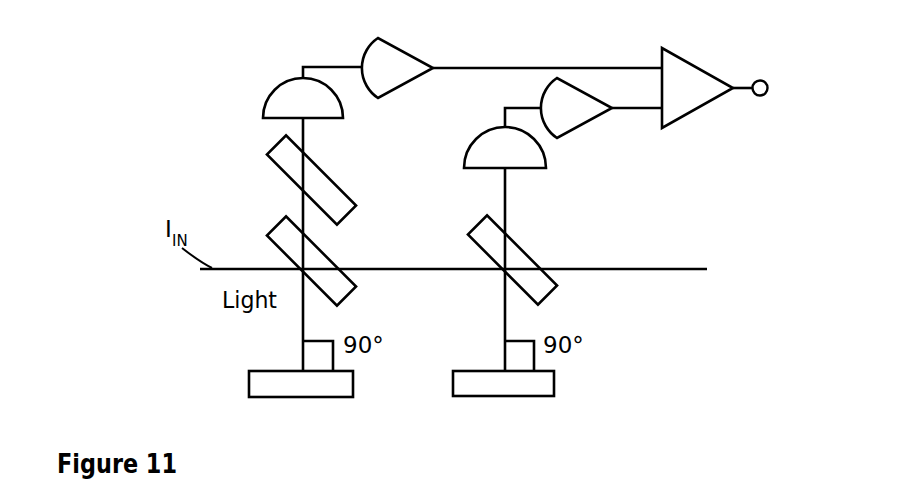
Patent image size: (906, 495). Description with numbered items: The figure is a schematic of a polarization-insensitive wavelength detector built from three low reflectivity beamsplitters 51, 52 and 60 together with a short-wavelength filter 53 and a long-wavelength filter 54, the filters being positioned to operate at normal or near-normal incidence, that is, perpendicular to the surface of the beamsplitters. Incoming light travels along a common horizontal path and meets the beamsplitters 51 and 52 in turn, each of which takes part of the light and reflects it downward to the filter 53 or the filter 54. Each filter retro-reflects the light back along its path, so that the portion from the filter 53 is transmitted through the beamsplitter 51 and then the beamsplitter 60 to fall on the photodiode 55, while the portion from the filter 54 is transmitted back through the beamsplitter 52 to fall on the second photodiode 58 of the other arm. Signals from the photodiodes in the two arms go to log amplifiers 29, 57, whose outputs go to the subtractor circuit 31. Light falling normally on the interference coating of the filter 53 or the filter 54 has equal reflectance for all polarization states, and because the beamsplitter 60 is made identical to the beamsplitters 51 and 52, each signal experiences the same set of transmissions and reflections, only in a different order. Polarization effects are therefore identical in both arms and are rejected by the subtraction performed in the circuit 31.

The amplifier 29 is at (400, 64).
The subtractor circuit 31 is at (690, 78).
The beamsplitter 51 is at (335, 283).
The beamsplitter 52 is at (525, 272).
The short-wavelength filter 53 is at (283, 380).
The long-wavelength filter 54 is at (538, 379).
The photodiode 55 is at (295, 95).
The log amplifier 57 is at (756, 80).
The photodetector 58 is at (533, 152).
The beamsplitter 60 is at (327, 192).